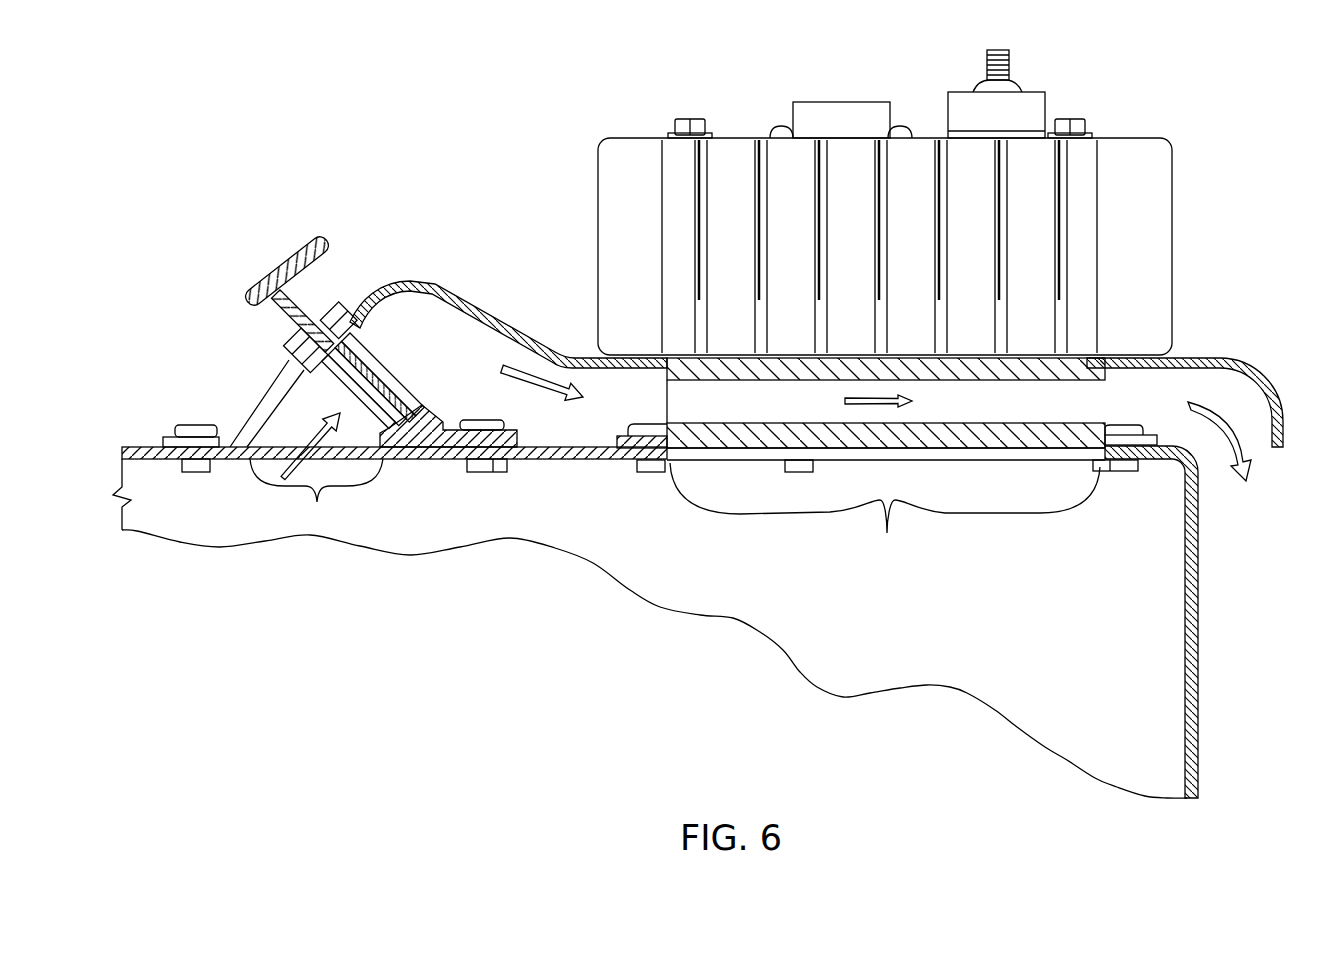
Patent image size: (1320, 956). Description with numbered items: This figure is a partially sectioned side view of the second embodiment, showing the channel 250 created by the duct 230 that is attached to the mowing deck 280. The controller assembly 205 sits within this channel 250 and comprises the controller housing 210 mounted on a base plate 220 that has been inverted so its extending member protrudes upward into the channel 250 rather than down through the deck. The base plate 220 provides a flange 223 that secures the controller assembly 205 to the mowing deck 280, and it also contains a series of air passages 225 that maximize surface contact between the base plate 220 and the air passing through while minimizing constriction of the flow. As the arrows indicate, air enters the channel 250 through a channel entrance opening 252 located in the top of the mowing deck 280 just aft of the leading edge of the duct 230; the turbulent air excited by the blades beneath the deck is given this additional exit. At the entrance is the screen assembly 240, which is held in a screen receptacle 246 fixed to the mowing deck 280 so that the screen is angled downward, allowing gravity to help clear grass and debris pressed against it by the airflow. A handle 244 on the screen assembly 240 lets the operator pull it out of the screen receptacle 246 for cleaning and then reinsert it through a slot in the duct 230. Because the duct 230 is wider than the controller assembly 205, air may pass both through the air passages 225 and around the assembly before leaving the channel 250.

The controller assembly 205 is at (901, 199).
The controller housing 210 is at (934, 303).
The base plate 220 is at (1033, 370).
The flange 223 is at (617, 438).
The air passages 225 is at (754, 405).
The duct 230 is at (441, 282).
The screen assembly 240 is at (369, 323).
The handle 244 is at (307, 242).
The screen receptacle 246 is at (425, 421).
The channel 250 is at (647, 405).
The channel entrance opening 252 is at (630, 496).
The mowing deck 280 is at (1198, 568).